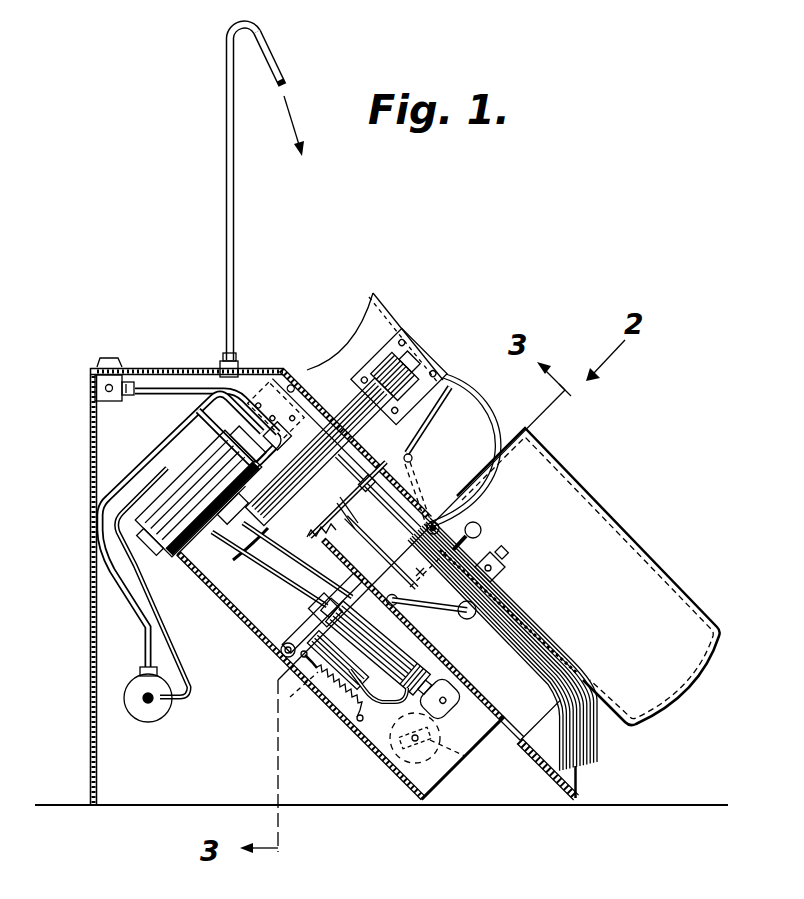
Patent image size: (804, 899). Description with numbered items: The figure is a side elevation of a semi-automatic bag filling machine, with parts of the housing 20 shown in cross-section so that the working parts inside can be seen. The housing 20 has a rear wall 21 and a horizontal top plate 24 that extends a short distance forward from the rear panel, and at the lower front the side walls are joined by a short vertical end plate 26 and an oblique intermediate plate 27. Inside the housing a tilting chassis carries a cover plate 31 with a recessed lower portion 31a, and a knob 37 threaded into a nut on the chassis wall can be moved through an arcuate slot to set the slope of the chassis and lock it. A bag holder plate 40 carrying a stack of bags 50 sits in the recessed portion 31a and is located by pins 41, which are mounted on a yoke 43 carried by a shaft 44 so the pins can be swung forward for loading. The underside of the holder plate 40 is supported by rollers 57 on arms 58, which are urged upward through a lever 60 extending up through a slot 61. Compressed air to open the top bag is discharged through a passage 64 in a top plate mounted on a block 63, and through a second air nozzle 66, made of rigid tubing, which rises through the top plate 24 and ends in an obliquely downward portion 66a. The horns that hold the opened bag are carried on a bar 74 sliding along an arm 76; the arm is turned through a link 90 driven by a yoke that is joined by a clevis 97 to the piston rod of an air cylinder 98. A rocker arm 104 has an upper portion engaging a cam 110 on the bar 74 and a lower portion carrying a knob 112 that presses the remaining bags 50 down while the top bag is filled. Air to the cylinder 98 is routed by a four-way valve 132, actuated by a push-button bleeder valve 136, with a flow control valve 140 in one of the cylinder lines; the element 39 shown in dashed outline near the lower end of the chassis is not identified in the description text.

The housing 20 is at (84, 462).
The rear wall 21 is at (89, 612).
The top plate 24 is at (143, 366).
The bleeder valve 136 is at (96, 381).
The air nozzle 66 is at (226, 57).
The nozzle end portion 66a is at (273, 54).
The link 90 is at (237, 559).
The clevis 97 is at (250, 573).
The four-way valve 132 is at (203, 480).
The cover plate 31 is at (365, 481).
The pins 41 is at (388, 557).
The knob 37 is at (401, 771).
The oblique intermediate plate 27 is at (547, 772).
The end plate 26 is at (583, 773).
The bag holder plate 40 is at (516, 665).
The recessed lower portion 31a is at (473, 683).
The stack of bags 50 is at (672, 591).
The rocker arm 104 is at (426, 438).
The arm 76 is at (410, 362).
The bar 74 is at (388, 357).
The cam 110 is at (420, 410).
The passage 64 is at (414, 489).
The knob 112 is at (455, 528).
The block 63 is at (334, 513).
The lever 60 is at (418, 571).
The arms 58 is at (437, 599).
The rollers 57 is at (463, 619).
The air cylinder 98 is at (386, 655).
The yoke 43 is at (300, 630).
The shaft 44 is at (283, 661).
The flow control valve 140 is at (314, 698).
The slot 61 is at (341, 722).
The hub 39 is at (458, 753).